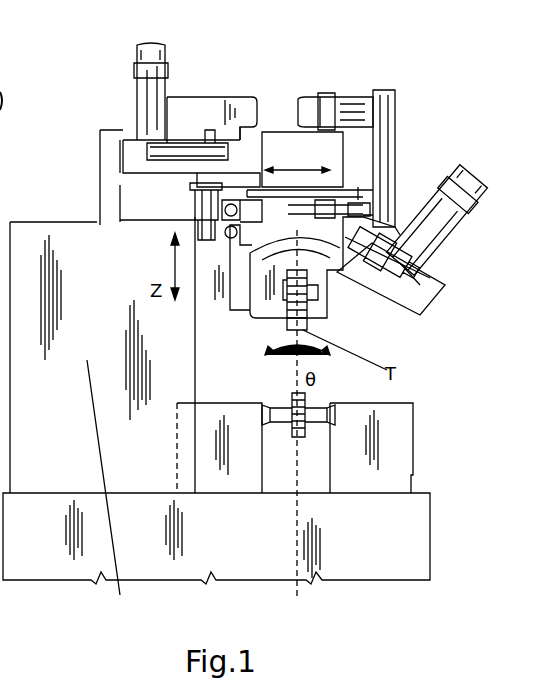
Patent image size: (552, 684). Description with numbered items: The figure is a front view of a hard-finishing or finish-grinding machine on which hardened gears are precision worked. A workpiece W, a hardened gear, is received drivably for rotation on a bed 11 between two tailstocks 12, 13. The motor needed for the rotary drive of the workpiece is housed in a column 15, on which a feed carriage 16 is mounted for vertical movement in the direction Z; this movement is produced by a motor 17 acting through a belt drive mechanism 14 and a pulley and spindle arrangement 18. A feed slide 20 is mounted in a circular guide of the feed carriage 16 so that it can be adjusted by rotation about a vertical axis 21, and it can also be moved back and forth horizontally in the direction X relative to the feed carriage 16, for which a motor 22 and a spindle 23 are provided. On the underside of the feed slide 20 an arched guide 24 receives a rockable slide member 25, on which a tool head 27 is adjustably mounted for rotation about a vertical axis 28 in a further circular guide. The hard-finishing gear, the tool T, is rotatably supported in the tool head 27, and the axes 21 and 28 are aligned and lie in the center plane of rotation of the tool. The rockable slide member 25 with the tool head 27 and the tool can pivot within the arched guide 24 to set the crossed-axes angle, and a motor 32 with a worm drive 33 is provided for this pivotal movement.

The bed 11 is at (88, 535).
The tailstock 12 is at (228, 470).
The tailstock 13 is at (365, 475).
The belt drive mechanism 14 is at (178, 150).
The column 15 is at (110, 493).
The feed carriage 16 is at (220, 290).
The motor 17 is at (145, 92).
The pulley and spindle arrangement 18 is at (197, 230).
The feed slide 20 is at (255, 118).
The vertical axis 21 is at (265, 203).
The motor 22 is at (353, 93).
The spindle 23 is at (368, 185).
The arched guide 24 is at (417, 283).
The rockable slide member 25 is at (425, 295).
The tool head 27 is at (315, 322).
The vertical axis 28 is at (310, 277).
The motor 32 is at (447, 237).
The worm drive 33 is at (403, 227).
The workpiece W is at (298, 509).